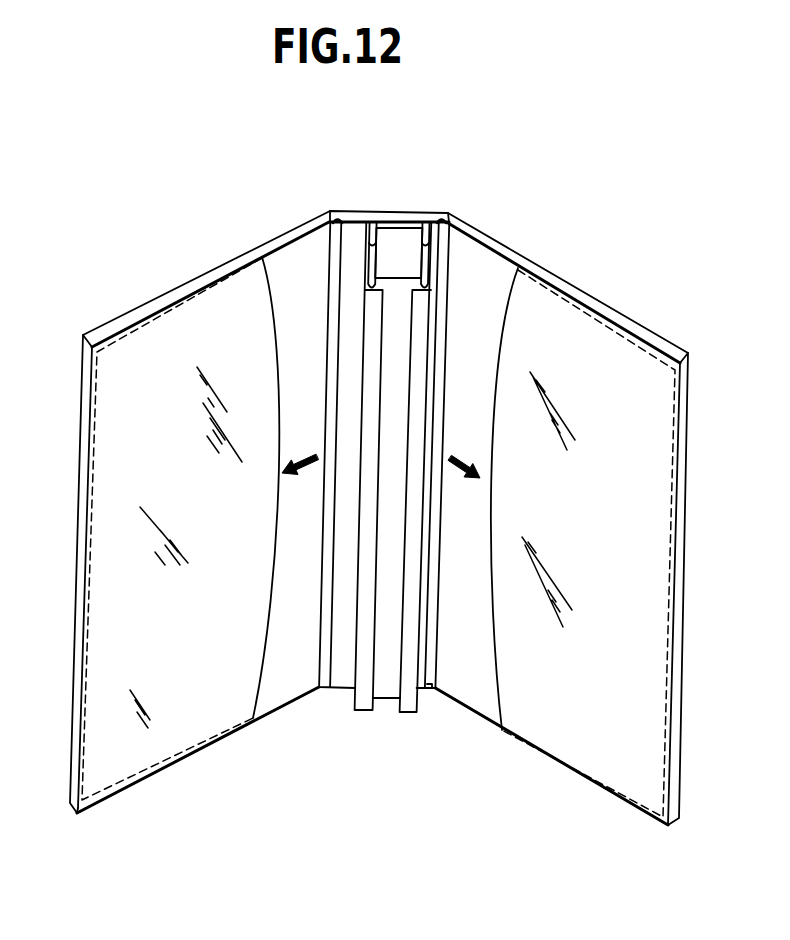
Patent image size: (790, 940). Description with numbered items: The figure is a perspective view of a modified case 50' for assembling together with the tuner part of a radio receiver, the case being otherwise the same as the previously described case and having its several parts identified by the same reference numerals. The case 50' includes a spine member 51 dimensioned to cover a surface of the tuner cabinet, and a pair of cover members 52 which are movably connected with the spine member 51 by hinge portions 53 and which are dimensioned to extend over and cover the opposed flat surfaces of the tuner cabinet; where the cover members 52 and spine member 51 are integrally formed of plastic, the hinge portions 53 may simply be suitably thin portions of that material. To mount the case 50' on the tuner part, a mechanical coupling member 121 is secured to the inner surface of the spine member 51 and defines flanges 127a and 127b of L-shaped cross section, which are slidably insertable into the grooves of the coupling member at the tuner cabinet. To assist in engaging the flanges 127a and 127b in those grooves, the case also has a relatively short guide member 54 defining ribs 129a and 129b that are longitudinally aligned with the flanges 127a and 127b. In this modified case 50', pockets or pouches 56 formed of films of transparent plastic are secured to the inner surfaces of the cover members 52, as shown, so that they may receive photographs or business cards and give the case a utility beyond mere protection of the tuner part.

The case 50' is at (379, 478).
The spine member 51 is at (360, 213).
The cover members 52 is at (277, 238).
The hinge portions 53 is at (336, 216).
The guide member 54 is at (399, 238).
The pockets or pouches 56 is at (225, 695).
The mechanical coupling member 121 is at (388, 660).
The flange 127a is at (411, 700).
The flange 127b is at (362, 702).
The rib 129a is at (426, 230).
The rib 129b is at (371, 229).